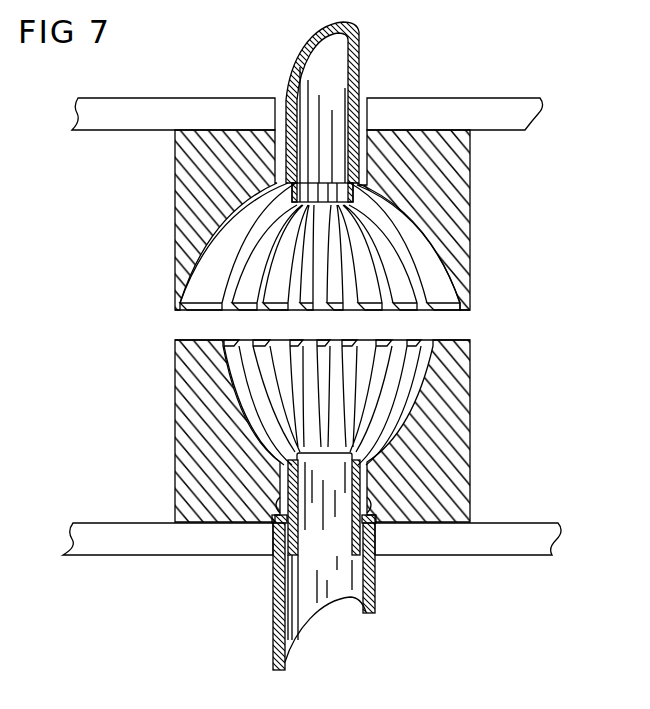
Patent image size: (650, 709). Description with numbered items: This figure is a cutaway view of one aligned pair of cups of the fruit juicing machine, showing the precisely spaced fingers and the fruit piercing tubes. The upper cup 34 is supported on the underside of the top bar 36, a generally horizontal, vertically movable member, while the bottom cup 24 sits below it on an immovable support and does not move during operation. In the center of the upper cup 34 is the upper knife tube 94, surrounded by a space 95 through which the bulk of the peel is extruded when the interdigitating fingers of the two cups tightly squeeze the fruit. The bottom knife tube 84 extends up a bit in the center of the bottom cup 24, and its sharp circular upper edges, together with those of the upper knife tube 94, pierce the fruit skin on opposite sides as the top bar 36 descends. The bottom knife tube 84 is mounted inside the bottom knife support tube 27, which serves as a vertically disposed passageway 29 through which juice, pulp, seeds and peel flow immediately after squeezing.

The top bar 36 is at (522, 115).
The upper cup 34 is at (457, 259).
The space 95 is at (361, 97).
The upper knife tube 94 is at (362, 189).
The bottom cup 24 is at (457, 388).
The bottom knife tube 84 is at (362, 483).
The bottom knife support tube 27 is at (370, 597).
The passageway 29 is at (337, 590).